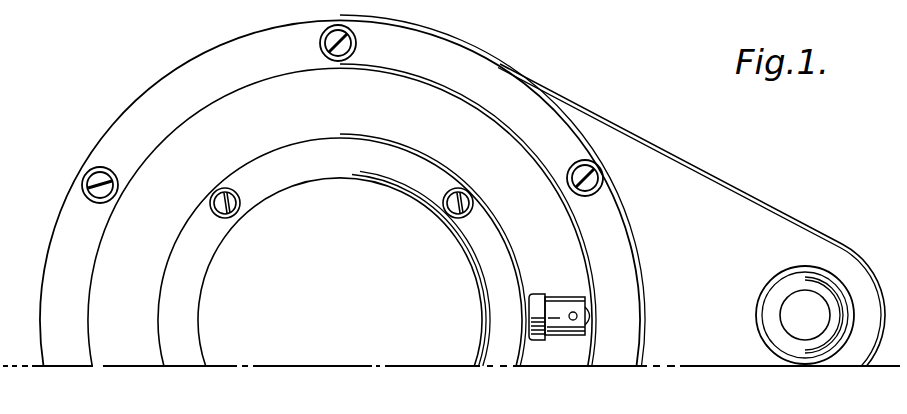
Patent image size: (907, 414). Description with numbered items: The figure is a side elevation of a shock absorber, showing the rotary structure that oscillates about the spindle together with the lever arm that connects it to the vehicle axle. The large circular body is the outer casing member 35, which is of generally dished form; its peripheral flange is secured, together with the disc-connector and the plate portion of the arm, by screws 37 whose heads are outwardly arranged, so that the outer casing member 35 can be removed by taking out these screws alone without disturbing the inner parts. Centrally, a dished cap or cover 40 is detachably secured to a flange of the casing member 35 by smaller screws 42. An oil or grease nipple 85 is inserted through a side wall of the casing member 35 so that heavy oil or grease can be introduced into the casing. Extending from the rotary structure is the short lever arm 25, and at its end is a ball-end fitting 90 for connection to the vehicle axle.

The short lever arm 25 is at (695, 197).
The outer casing member 35 is at (455, 125).
The screws 37 is at (357, 46).
The dished cap or cover 40 is at (350, 163).
The screws 42 is at (240, 196).
The oil or grease nipple 85 is at (556, 305).
The ball-end fitting 90 is at (797, 282).